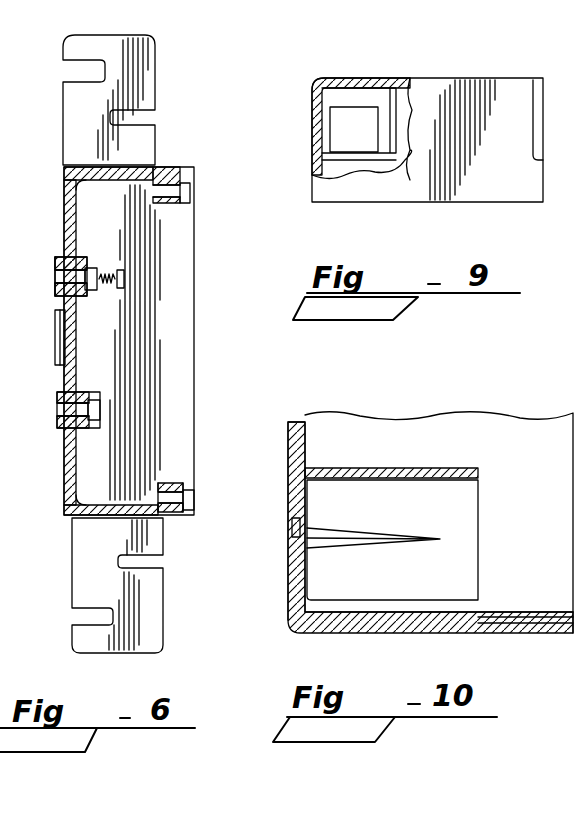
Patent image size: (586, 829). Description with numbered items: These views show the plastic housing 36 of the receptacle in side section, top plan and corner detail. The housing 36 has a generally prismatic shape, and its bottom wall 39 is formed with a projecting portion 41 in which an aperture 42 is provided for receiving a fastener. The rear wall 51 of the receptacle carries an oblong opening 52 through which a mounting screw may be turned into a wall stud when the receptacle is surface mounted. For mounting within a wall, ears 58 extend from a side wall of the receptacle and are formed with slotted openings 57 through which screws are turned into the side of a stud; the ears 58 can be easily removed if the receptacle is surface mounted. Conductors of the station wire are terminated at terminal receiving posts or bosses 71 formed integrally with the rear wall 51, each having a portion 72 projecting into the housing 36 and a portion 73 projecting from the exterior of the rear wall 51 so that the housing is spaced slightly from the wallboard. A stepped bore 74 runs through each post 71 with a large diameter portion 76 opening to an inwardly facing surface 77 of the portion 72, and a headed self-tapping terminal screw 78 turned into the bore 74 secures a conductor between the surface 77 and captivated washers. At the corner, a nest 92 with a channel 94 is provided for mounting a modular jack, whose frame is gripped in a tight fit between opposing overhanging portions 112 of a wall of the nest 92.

In FIG. 9, the housing 36 is at (472, 73).
In FIG. 10, the housing 36 is at (517, 644).
In FIG. 10, the bottom wall 39 is at (407, 630).
In FIG. 6, the projecting portion 41 is at (172, 486).
In FIG. 6, the aperture 42 is at (194, 498).
In FIG. 6, the rear wall 51 is at (70, 462).
In FIG. 10, the rear wall 51 is at (292, 580).
In FIG. 6, the oblong opening 52 is at (55, 342).
In FIG. 6, the slotted opening 57 is at (70, 73).
In FIG. 6, the ear 58 is at (145, 74).
In FIG. 9, the ear 58 is at (545, 90).
In FIG. 6, the terminal receiving post 71 is at (82, 258).
In FIG. 6, the portion 72 is at (90, 297).
In FIG. 6, the portion 73 is at (60, 260).
In FIG. 6, the stepped bore 74 is at (57, 278).
In FIG. 6, the large diameter portion 76 is at (96, 410).
In FIG. 6, the inwardly facing surface 77 is at (97, 277).
In FIG. 6, the terminal screw 78 is at (124, 281).
In FIG. 9, the nest 92 is at (358, 93).
In FIG. 10, the nest 92 is at (481, 504).
In FIG. 9, the channel 94 is at (370, 160).
In FIG. 10, the channel 94 is at (532, 617).
In FIG. 9, the overhanging portion 112 is at (375, 138).
In FIG. 10, the overhanging portion 112 is at (434, 470).